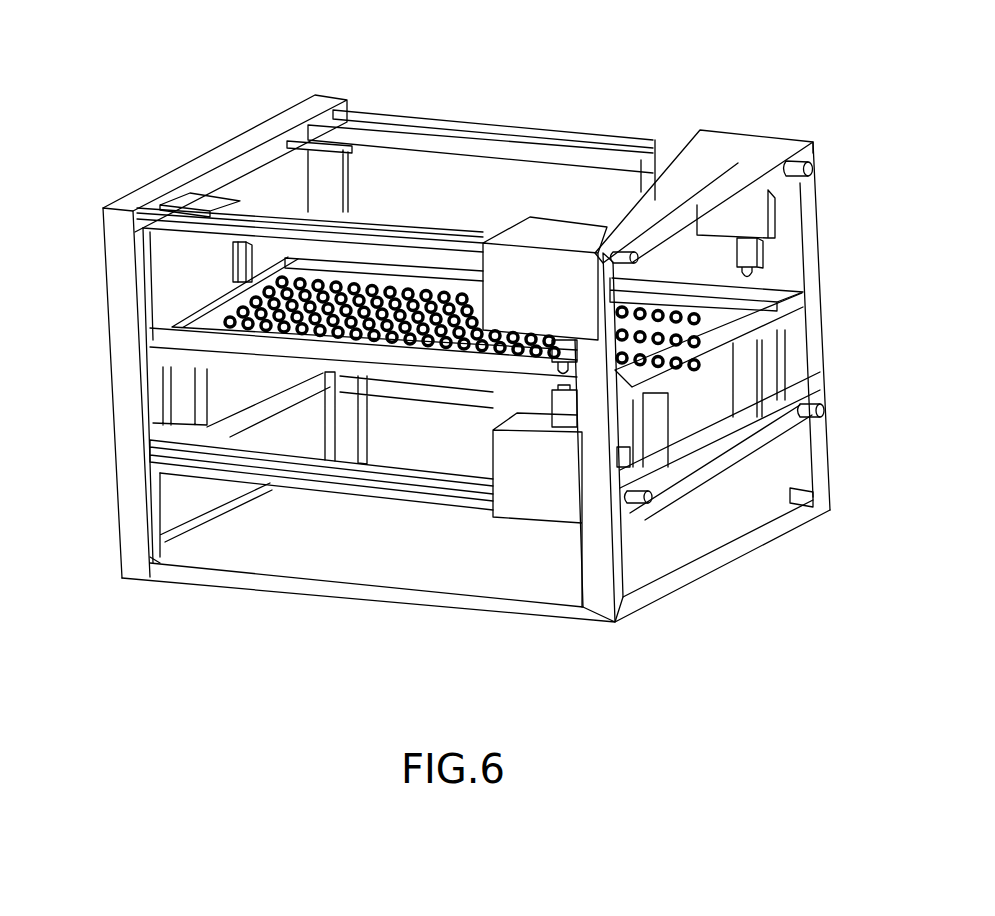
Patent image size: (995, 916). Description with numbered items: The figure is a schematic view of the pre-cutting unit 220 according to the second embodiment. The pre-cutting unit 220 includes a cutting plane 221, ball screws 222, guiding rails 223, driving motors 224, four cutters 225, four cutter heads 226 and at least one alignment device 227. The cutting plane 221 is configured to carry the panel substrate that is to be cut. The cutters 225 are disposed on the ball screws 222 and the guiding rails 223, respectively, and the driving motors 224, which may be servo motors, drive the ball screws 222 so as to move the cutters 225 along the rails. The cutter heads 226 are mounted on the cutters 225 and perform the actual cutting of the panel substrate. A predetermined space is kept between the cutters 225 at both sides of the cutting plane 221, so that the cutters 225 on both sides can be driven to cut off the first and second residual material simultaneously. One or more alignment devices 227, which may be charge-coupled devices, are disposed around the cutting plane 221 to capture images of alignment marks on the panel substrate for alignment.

The pre-cutting unit 220 is at (597, 105).
The cutting plane 221 is at (230, 300).
The ball screws 222 is at (160, 448).
The guiding rails 223 is at (174, 203).
The driving motors 224 is at (813, 167).
The cutters 225 is at (540, 233).
The cutter heads 226 is at (753, 253).
The alignment device 227 is at (232, 266).